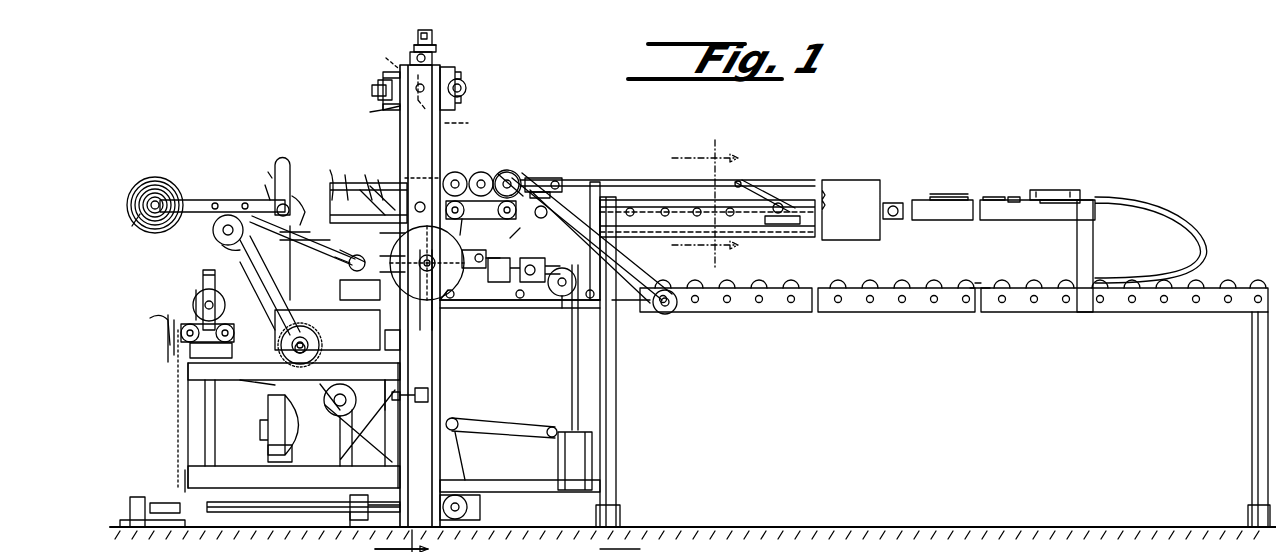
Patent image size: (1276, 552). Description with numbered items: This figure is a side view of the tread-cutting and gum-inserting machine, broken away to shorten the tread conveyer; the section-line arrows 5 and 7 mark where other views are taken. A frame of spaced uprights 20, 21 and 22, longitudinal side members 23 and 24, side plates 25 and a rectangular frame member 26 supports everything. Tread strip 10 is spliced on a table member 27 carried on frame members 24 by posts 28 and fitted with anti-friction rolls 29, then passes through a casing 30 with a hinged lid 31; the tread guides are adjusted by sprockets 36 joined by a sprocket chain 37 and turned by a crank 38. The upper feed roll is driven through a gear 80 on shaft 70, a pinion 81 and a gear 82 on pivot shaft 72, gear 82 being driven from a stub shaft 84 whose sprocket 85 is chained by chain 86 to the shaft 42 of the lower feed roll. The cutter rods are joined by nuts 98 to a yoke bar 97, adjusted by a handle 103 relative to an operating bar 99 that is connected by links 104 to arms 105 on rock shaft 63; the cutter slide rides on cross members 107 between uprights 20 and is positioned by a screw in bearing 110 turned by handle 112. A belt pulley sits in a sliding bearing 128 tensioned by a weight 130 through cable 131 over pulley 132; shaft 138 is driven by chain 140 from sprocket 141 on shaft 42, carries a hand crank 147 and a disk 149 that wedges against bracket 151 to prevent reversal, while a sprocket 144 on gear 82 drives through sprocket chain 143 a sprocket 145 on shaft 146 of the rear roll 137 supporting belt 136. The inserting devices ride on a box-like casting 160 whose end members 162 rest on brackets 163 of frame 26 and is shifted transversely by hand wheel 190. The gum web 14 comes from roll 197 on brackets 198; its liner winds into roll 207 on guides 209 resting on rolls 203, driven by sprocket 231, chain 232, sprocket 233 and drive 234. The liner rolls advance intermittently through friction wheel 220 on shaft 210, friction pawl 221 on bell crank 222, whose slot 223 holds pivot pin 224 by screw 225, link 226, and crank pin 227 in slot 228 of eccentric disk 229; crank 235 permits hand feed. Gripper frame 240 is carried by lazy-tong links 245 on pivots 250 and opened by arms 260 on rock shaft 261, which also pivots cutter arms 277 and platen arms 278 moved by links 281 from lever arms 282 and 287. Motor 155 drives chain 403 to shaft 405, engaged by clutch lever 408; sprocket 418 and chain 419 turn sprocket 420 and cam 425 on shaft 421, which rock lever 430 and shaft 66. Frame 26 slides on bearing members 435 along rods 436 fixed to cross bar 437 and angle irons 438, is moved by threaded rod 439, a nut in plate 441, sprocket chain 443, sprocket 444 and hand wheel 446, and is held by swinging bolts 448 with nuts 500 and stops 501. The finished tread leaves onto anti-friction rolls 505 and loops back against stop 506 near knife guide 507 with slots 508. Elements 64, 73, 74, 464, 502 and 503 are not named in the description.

The section line 5 is at (695, 205).
The section line 7 is at (392, 542).
The web strip 10 is at (1183, 215).
The strip or web 14 is at (300, 196).
The uprights 20 is at (440, 377).
The uprights 21 is at (616, 408).
The uprights 22 is at (1252, 412).
The longitudinal side members 23 is at (518, 490).
The longitudinal side members 24 is at (985, 308).
The side plates 25 is at (512, 308).
The rectangular frame member 26 is at (235, 400).
The table member 27 is at (905, 222).
The posts 28 is at (618, 258).
The anti-friction rolls 29 is at (893, 200).
The casing 30 is at (845, 180).
The hinged lid 31 is at (796, 180).
The sprockets 36 is at (585, 180).
The sprocket chain 37 is at (597, 182).
The crank 38 is at (745, 182).
The shaft 42 is at (481, 210).
The rock shaft 63 is at (465, 85).
The bracket 64 is at (452, 70).
The shaft 66 is at (470, 514).
The shaft 70 is at (474, 174).
The pivot shaft 72 is at (512, 172).
The bracket 73 is at (540, 178).
The bracket arm 74 is at (548, 178).
The gear 80 is at (450, 172).
The pinion 81 is at (492, 175).
The gear 82 is at (506, 170).
The stub shaft 84 is at (519, 241).
The sprocket 85 is at (536, 217).
The chain 86 is at (496, 253).
The yoke bar 97 is at (414, 48).
The nuts 98 is at (420, 40).
The operating bar 99 is at (432, 58).
The operating handle 103 is at (428, 32).
The links 104 is at (386, 58).
The arms 105 is at (467, 121).
The cross members 107 is at (400, 118).
The bearing 110 is at (386, 107).
The handle 112 is at (383, 75).
The sliding bearing 128 is at (524, 270).
The weight 130 is at (560, 446).
The cable 131 is at (572, 365).
The pulley 132 is at (562, 308).
The belt 136 is at (636, 312).
The rolls 137 is at (427, 259).
The shaft 138 is at (520, 299).
The chain 140 is at (455, 244).
The sprocket 141 is at (460, 222).
The sprocket chain 143 is at (570, 275).
The sprocket 144 is at (522, 172).
The sprocket 145 is at (590, 246).
The shaft 146 is at (670, 312).
The crank 147 is at (425, 298).
The disk 149 is at (444, 300).
The bracket 151 is at (474, 266).
The motor 155 is at (268, 450).
The box-like casting 160 is at (308, 340).
The members 162 is at (322, 325).
The brackets 163 is at (378, 386).
The hand wheel 190 is at (213, 230).
The roll 197 is at (140, 228).
The brackets 198 is at (188, 204).
The rolls 203 is at (196, 306).
The roll 207 is at (193, 300).
The guides 209 is at (203, 272).
The shaft 210 is at (285, 185).
The friction wheel 220 is at (335, 222).
The friction pawl 221 is at (262, 185).
The bell crank 222 is at (262, 200).
The slot 223 is at (302, 240).
The pivot pin 224 is at (222, 245).
The screw 225 is at (240, 262).
The link 226 is at (303, 263).
The crank pin 227 is at (345, 280).
The slot 228 is at (332, 257).
The eccentric disk 229 is at (362, 261).
The sprocket 231 is at (300, 239).
The chain 232 is at (252, 296).
The sprocket 233 is at (234, 333).
The chain and sprocket drive 234 is at (211, 351).
The crank 235 is at (275, 175).
The horizontal frame 240 is at (362, 175).
The lazy-tong links 245 is at (380, 185).
The pivots 250 is at (422, 184).
The arms 260 is at (328, 172).
The rock shaft 261 is at (345, 178).
The arms 277 is at (385, 180).
The arms 278 is at (422, 214).
The adjustable links 281 is at (394, 235).
The lever arms 282 is at (394, 256).
The lever arms 287 is at (394, 270).
The chain 403 is at (282, 384).
The shaft 405 is at (300, 355).
The clutch shifting lever 408 is at (294, 370).
The sprocket 418 is at (300, 340).
The chain 419 is at (318, 408).
The sprocket 420 is at (336, 386).
The shaft 421 is at (330, 425).
The cam 425 is at (270, 412).
The lever 430 is at (458, 470).
The bearing members 435 is at (352, 527).
The horizontal rods 436 is at (296, 503).
The cross bar 437 is at (395, 500).
The angle irons 438 is at (122, 512).
The threaded rod 439 is at (160, 503).
The plate 441 is at (292, 479).
The sprocket chain 443 is at (178, 418).
The sprocket 444 is at (168, 348).
The hand wheel 446 is at (150, 320).
The swinging bolts 448 is at (417, 406).
The gear housing 464 is at (360, 312).
The nuts 500 is at (392, 396).
The adjustable stops 501 is at (395, 340).
The arm 502 is at (510, 425).
The pivot 503 is at (552, 427).
The anti-friction rolls 505 is at (980, 286).
The stop 506 is at (935, 194).
The knife guide 507 is at (1052, 203).
The slots 508 is at (1072, 190).